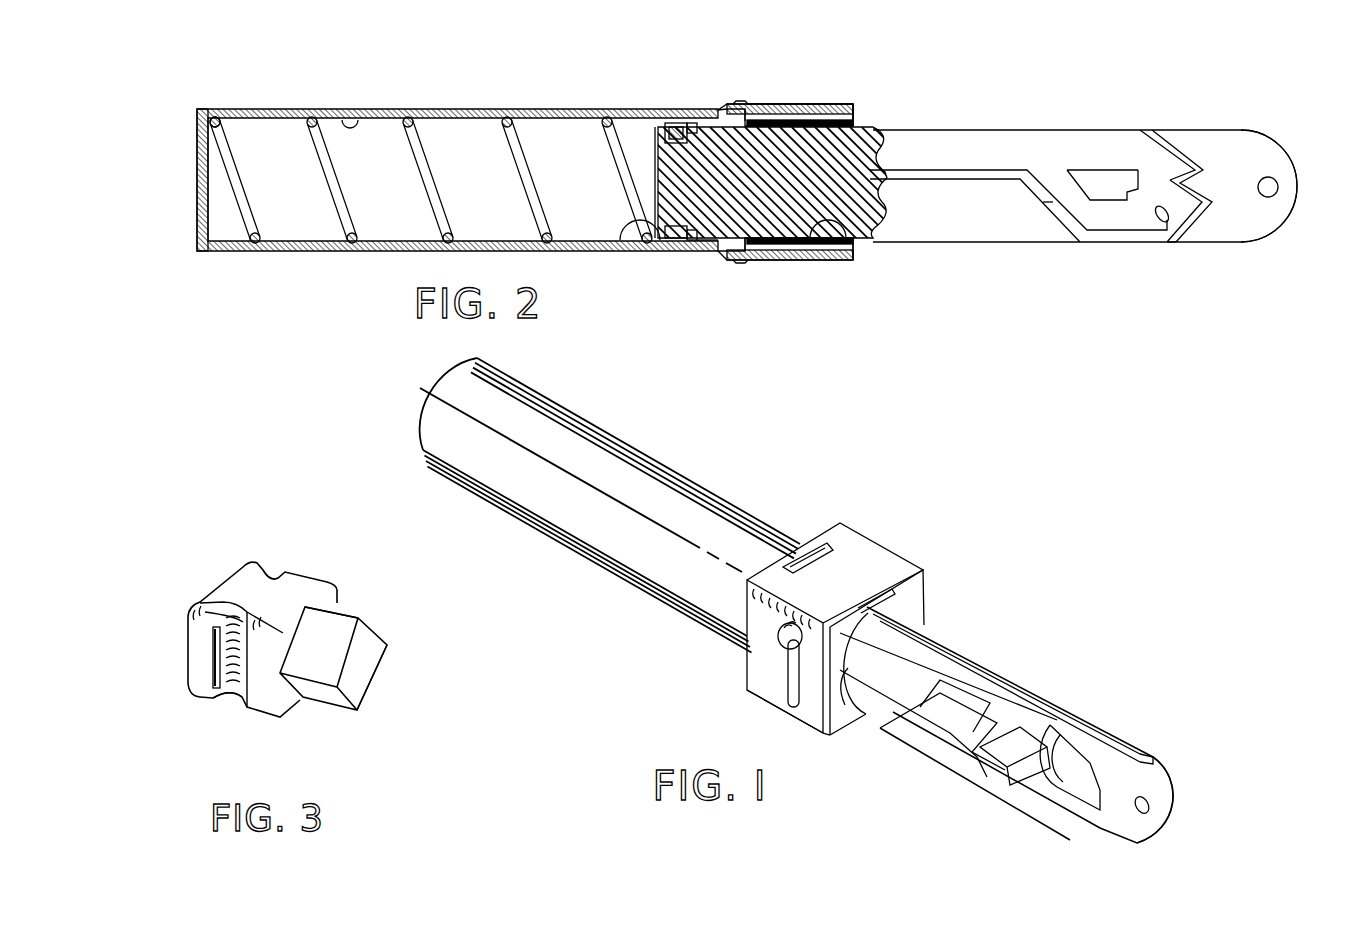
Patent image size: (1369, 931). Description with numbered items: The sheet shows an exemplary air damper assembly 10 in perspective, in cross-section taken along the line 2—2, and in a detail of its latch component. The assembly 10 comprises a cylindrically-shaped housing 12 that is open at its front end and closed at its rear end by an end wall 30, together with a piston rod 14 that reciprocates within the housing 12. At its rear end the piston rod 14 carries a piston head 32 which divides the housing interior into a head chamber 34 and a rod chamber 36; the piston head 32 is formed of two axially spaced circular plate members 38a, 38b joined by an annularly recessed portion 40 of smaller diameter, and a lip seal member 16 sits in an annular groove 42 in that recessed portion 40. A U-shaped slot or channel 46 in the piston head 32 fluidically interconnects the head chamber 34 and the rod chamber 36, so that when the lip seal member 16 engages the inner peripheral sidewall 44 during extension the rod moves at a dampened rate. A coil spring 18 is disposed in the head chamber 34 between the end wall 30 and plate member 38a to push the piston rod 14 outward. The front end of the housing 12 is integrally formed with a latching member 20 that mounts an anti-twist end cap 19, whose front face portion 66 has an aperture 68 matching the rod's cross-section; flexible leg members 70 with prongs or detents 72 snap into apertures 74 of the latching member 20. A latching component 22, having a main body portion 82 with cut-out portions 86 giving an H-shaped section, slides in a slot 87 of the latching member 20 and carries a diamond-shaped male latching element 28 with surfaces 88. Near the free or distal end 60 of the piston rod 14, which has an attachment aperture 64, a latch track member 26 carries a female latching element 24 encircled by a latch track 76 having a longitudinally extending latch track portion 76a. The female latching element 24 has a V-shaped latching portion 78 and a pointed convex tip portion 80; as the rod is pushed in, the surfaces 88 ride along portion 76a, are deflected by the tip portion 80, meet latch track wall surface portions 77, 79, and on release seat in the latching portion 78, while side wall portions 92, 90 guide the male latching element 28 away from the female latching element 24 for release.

In FIG. 2, the air damper assembly 10 is at (531, 88).
In FIG. 1, the air damper assembly 10 is at (712, 437).
In FIG. 2, the cylindrically-shaped housing 12 is at (386, 110).
In FIG. 1, the cylindrically-shaped housing 12 is at (590, 424).
In FIG. 2, the piston rod 14 is at (1276, 132).
In FIG. 1, the piston rod 14 is at (994, 666).
In FIG. 2, the lip seal member 16 is at (676, 126).
In FIG. 2, the coil spring 18 is at (224, 140).
In FIG. 1, the anti-twist end cap 19 is at (919, 598).
In FIG. 2, the latching member 20 is at (795, 103).
In FIG. 1, the latching member 20 is at (758, 664).
In FIG. 3, the latching component 22 is at (210, 537).
In FIG. 2, the female latching element 24 is at (1110, 177).
In FIG. 1, the female latching element 24 is at (1003, 768).
In FIG. 2, the latch track member 26 is at (984, 140).
In FIG. 3, the male latching element 28 is at (370, 661).
In FIG. 2, the end wall 30 is at (197, 178).
In FIG. 2, the piston head 32 is at (703, 245).
In FIG. 2, the head chamber 34 is at (275, 138).
In FIG. 2, the rod chamber 36 is at (858, 240).
In FIG. 2, the circular plate member 38a is at (668, 123).
In FIG. 2, the circular plate member 38b is at (693, 123).
In FIG. 2, the annularly recessed portion 40 is at (658, 240).
In FIG. 2, the annular groove 42 is at (640, 243).
In FIG. 2, the inner peripheral sidewall 44 is at (336, 118).
In FIG. 2, the U-shaped slot or channel 46 is at (660, 150).
In FIG. 2, the free or distal end 60 is at (1254, 240).
In FIG. 1, the free or distal end 60 is at (1079, 846).
In FIG. 2, the aperture 64 is at (1279, 185).
In FIG. 1, the aperture 64 is at (1150, 805).
In FIG. 2, the front face portion 66 is at (854, 104).
In FIG. 1, the front face portion 66 is at (822, 731).
In FIG. 1, the aperture 68 is at (847, 706).
In FIG. 2, the flexible leg members 70 is at (818, 103).
In FIG. 2, the prongs or detents 72 is at (752, 106).
In FIG. 2, the apertures 74 is at (739, 101).
In FIG. 1, the apertures 74 is at (832, 546).
In FIG. 2, the latch track 76 is at (1107, 147).
In FIG. 1, the latch track 76 is at (1030, 712).
In FIG. 2, the longitudinally extending latch track portion 76a is at (963, 142).
In FIG. 1, the longitudinally extending latch track portion 76a is at (943, 680).
In FIG. 2, the latch track wall surface portion 77 is at (1197, 170).
In FIG. 2, the V-shaped or concave latching portion 78 is at (1122, 196).
In FIG. 2, the latch track wall surface portion 79 is at (1155, 183).
In FIG. 2, the pointed convex tip portion 80 is at (1067, 172).
In FIG. 1, the main body portion 82 is at (778, 637).
In FIG. 3, the main body portion 82 is at (210, 594).
In FIG. 3, the cut-out portions 86 is at (294, 571).
In FIG. 1, the slot 87 is at (790, 704).
In FIG. 3, the surfaces 88 is at (378, 627).
In FIG. 2, the side wall portion 90 is at (1166, 226).
In FIG. 2, the side wall portion 92 is at (1182, 200).
In FIG. 1, the section line 2 is at (405, 393).